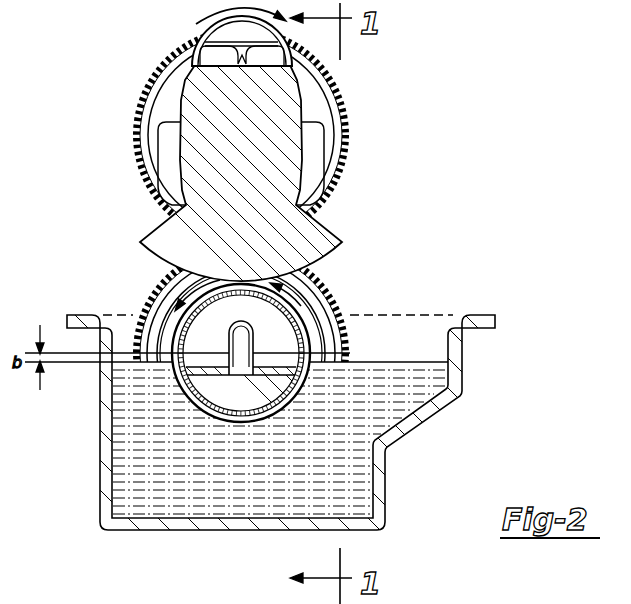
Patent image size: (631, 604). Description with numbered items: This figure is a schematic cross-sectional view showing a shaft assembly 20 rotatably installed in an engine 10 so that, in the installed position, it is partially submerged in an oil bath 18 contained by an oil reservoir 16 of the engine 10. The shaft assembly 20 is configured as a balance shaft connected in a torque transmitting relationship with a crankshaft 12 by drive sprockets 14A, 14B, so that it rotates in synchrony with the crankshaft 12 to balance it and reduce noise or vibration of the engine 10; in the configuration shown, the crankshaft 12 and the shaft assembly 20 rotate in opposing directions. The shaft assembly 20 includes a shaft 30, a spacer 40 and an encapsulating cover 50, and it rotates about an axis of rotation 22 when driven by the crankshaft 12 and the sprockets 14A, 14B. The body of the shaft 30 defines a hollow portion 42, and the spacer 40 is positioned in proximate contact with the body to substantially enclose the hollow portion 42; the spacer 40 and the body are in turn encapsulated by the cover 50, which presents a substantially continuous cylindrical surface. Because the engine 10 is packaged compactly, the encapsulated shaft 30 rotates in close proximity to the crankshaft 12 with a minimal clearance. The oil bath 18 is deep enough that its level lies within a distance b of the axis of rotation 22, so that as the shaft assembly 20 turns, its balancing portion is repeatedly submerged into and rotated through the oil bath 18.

The engine 10 is at (96, 88).
The crankshaft 12 is at (188, 27).
The drive sprocket 14A is at (338, 100).
The drive sprocket 14B is at (168, 282).
The oil reservoir 16 is at (100, 472).
The oil bath 18 is at (118, 503).
The shaft assembly 20 is at (310, 318).
The axis of rotation 22 is at (246, 350).
The shaft 30 is at (203, 398).
The spacer 40 is at (177, 338).
The hollow portion 42 is at (241, 327).
The cover 50 is at (346, 343).